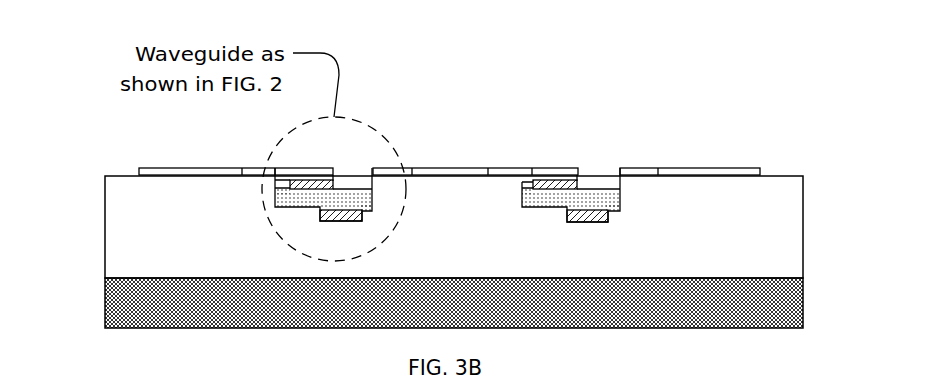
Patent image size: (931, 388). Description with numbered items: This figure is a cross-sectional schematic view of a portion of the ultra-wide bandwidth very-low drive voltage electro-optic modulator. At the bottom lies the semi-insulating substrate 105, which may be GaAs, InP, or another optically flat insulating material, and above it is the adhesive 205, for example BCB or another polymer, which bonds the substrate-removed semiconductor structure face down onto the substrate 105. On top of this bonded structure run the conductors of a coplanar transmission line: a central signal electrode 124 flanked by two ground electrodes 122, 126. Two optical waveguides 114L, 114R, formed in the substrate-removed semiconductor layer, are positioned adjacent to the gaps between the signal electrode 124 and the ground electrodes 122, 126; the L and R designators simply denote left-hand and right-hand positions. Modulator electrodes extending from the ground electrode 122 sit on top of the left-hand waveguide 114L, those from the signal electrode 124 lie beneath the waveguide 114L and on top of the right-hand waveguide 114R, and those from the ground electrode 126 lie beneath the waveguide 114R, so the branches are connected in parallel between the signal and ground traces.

The substrate 105 is at (105, 308).
The adhesive 205 is at (105, 240).
The ground electrode 122 is at (188, 168).
The signal electrode 124 is at (467, 168).
The ground electrode 126 is at (718, 168).
The left-hand optical waveguide 114L is at (362, 158).
The right-hand optical waveguide 114R is at (607, 156).